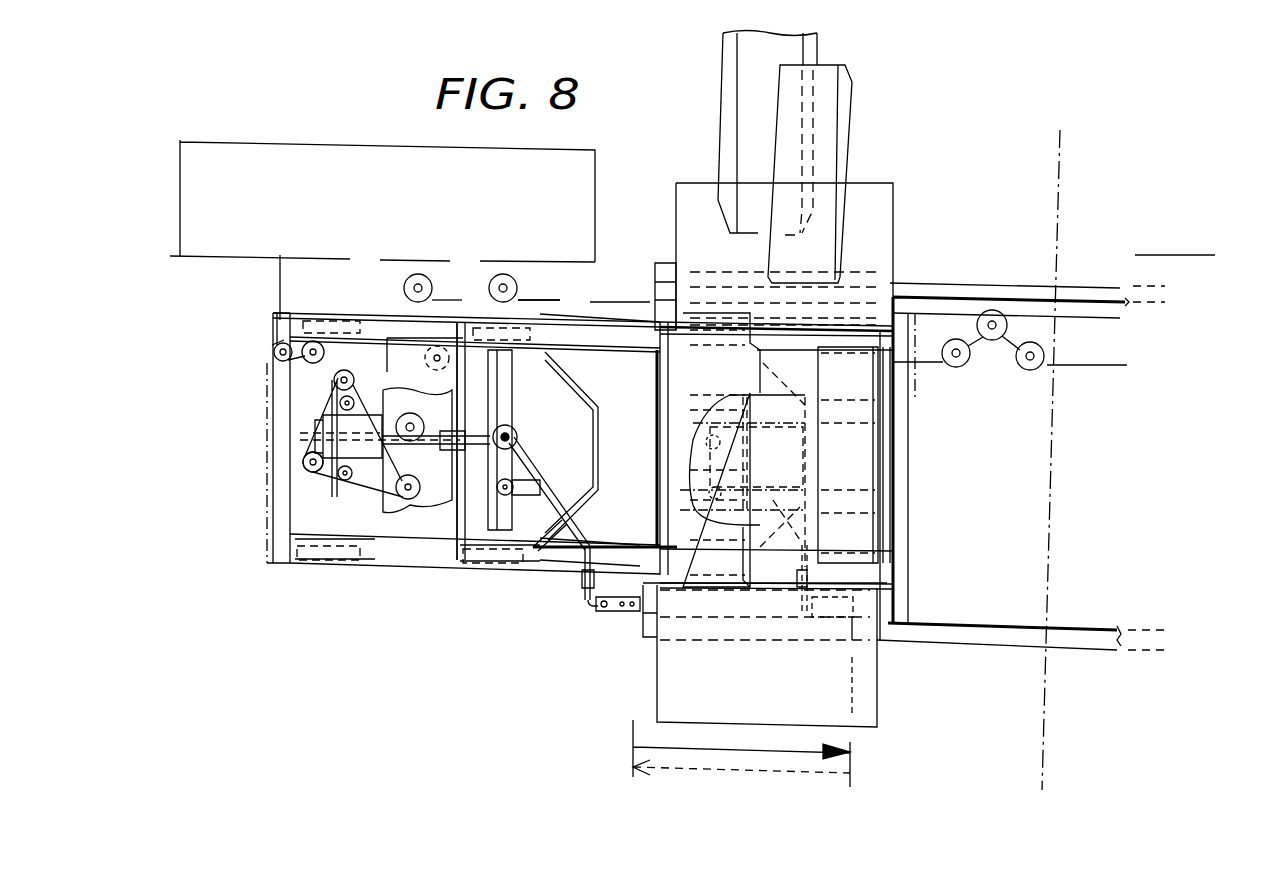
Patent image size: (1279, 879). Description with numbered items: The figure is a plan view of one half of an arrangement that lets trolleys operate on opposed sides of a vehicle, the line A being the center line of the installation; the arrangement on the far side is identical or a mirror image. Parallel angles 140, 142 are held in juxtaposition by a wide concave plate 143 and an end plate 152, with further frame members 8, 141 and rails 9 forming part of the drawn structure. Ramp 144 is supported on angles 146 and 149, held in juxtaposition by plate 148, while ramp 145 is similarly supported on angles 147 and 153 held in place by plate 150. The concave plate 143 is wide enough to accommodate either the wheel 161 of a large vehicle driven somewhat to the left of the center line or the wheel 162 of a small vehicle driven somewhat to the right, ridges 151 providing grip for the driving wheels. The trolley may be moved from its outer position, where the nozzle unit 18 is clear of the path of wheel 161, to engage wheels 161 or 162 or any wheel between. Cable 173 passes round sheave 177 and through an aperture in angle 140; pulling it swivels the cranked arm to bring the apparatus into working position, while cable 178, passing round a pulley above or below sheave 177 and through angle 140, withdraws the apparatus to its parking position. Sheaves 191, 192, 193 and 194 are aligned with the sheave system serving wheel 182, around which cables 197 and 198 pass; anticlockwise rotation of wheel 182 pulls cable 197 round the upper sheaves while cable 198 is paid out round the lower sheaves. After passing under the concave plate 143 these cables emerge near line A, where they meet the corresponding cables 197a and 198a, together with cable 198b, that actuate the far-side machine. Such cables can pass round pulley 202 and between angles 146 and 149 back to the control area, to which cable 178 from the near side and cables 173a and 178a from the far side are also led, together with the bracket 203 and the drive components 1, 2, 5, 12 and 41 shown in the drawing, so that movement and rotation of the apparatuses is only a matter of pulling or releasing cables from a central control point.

The control unit bracket 203 is at (250, 160).
The end plate 152 is at (278, 548).
The guide rail 9 is at (305, 566).
The rail 141 is at (372, 565).
The cross member 8 is at (406, 566).
The angle 142 is at (555, 565).
The sheave 177 is at (276, 350).
The cable 178 is at (270, 333).
The cable 173 is at (316, 310).
The sheave 193 is at (430, 345).
The sheave 194 is at (402, 403).
The cable 197 is at (420, 276).
The cable 198 is at (412, 272).
The cable 198a is at (493, 280).
The cable 197a is at (500, 276).
The sheave 191 is at (303, 462).
The sheave 192 is at (313, 462).
The wheel 182 is at (330, 480).
The coupling 5 is at (449, 426).
The shaft 2 is at (462, 435).
The plate 1 is at (508, 386).
The lever 12 is at (518, 440).
The arm 41 is at (575, 378).
The plate 150 is at (635, 548).
The concave plate 143 is at (665, 460).
The wheel 161 is at (737, 93).
The wheel 162 is at (836, 118).
The ramp 144 is at (880, 205).
The plate 148 is at (655, 295).
The angle 140 is at (578, 325).
The angle 146 is at (655, 325).
The ridges 151 is at (772, 395).
The nozzle unit 18 is at (602, 612).
The angle 147 is at (643, 622).
The ramp 145 is at (876, 694).
The angle 149 is at (918, 282).
The angle 153 is at (940, 632).
The pulley 202 is at (993, 310).
The pulley 198b is at (1098, 415).
The cable 173a is at (1220, 270).
The cable 178a is at (1257, 269).
The line A is at (1046, 760).